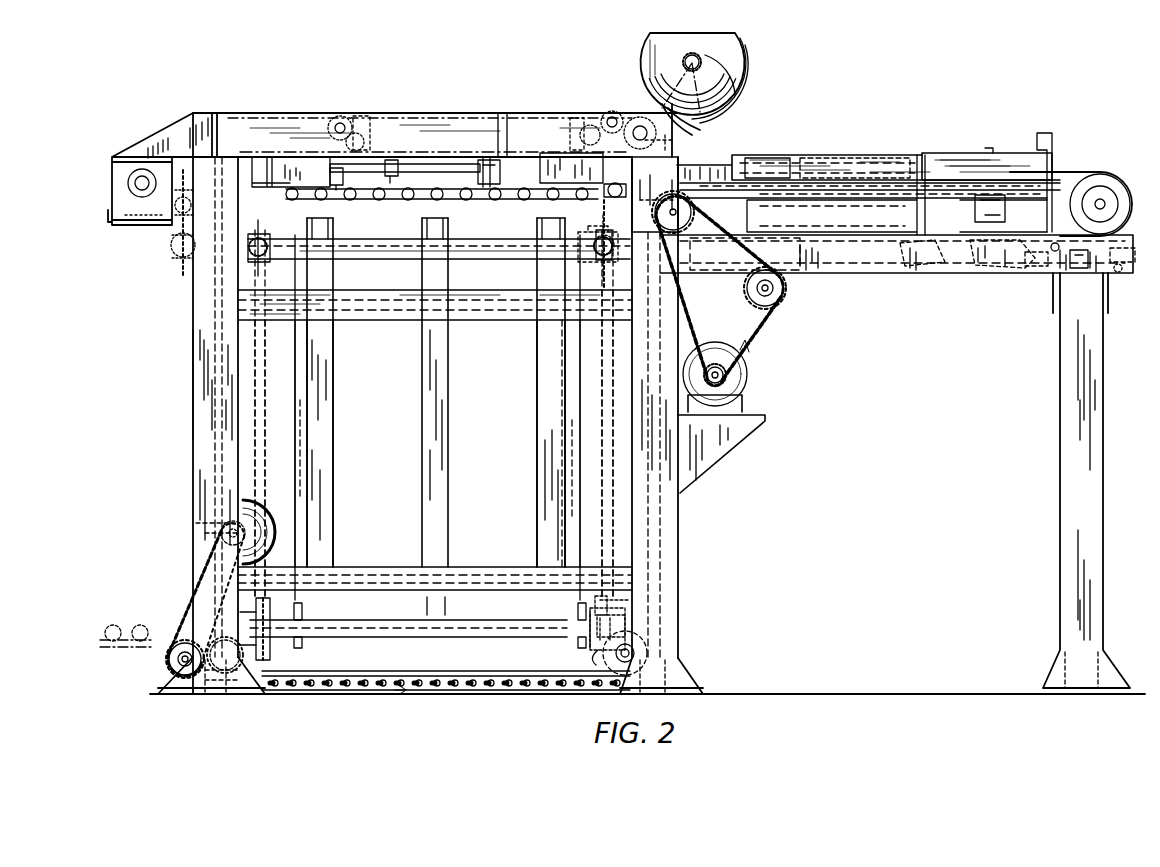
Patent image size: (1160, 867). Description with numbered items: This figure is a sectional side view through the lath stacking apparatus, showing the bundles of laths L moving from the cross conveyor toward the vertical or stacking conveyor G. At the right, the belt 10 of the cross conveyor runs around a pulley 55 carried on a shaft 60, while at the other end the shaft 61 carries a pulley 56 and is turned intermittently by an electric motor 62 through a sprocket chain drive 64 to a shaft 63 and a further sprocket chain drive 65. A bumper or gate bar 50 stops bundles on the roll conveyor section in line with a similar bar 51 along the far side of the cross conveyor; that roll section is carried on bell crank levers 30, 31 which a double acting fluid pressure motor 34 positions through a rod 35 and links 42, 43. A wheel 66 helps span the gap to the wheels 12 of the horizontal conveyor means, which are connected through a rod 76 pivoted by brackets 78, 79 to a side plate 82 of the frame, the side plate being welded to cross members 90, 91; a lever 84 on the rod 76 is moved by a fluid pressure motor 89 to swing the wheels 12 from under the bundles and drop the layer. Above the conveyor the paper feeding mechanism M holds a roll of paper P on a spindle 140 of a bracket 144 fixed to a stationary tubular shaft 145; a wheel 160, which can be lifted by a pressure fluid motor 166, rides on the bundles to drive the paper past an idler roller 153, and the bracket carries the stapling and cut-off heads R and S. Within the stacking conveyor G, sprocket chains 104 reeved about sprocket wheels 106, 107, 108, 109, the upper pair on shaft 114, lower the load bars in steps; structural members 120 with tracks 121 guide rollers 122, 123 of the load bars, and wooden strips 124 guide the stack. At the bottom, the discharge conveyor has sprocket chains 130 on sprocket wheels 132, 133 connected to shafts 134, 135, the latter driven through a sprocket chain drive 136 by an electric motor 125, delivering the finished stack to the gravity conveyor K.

The double acting fluid pressure motor 89 is at (330, 117).
The cross member 91 is at (380, 117).
The cross member 90 is at (500, 113).
The stapling head R is at (577, 118).
The cut-off head S is at (632, 124).
The pressure fluid motor 166 is at (618, 112).
The shaft or spindle 140 is at (718, 66).
The paper feeding mechanism M is at (636, 56).
The strip of paper P is at (700, 120).
The bracket 144 is at (676, 145).
The bar 51 is at (786, 156).
The bundle of laths L is at (822, 160).
The bumper or gate bar 50 is at (968, 155).
The belt 10 is at (1062, 175).
The shaft 60 is at (1104, 200).
The pulley 55 is at (1119, 208).
The bracket 79 is at (398, 160).
The rod 76 is at (440, 172).
The bracket 78 is at (483, 170).
The wheel 160 is at (572, 150).
The lever 84 is at (332, 170).
The wheel 12 is at (490, 199).
The side plate 82 is at (526, 198).
The stationary tubular shaft 145 is at (655, 193).
The idler roller or wheel 153 is at (614, 182).
The wheel 66 is at (607, 245).
The shaft 61 is at (676, 212).
The pulley 56 is at (700, 240).
The sprocket chain drive 65 is at (708, 278).
The shaft 63 is at (785, 289).
The sprocket chain drive 64 is at (781, 325).
The electric motor 62 is at (750, 375).
The bell crank lever 31 is at (880, 273).
The link 43 is at (933, 270).
The link 42 is at (1010, 270).
The rod 35 is at (1040, 274).
The sprocket wheel 107 is at (1078, 270).
The double acting fluid pressure operated motor 34 is at (1130, 268).
The sprocket wheel 106 is at (1118, 275).
The bell crank lever 30 is at (1032, 210).
The upper shaft 114 is at (372, 242).
The sprocket wheel 108 is at (265, 262).
The sprocket chain 104 is at (263, 380).
The wooden strip 124 is at (334, 338).
The structural member 120 is at (302, 422).
The groove or track 121 is at (300, 449).
The vertical or stacking conveyor G is at (182, 441).
The electric motor 125 is at (220, 513).
The sprocket chain drive 136 is at (186, 594).
The gravity conveyor K is at (127, 619).
The shaft 135 is at (170, 659).
The sprocket wheel 133 is at (170, 673).
The sprocket chain 130 is at (373, 696).
The sprocket wheel 109 is at (272, 655).
The wheel or roller 122 is at (304, 614).
The wheel or roller 123 is at (304, 645).
The sprocket wheel 132 is at (591, 645).
The shaft 134 is at (635, 650).